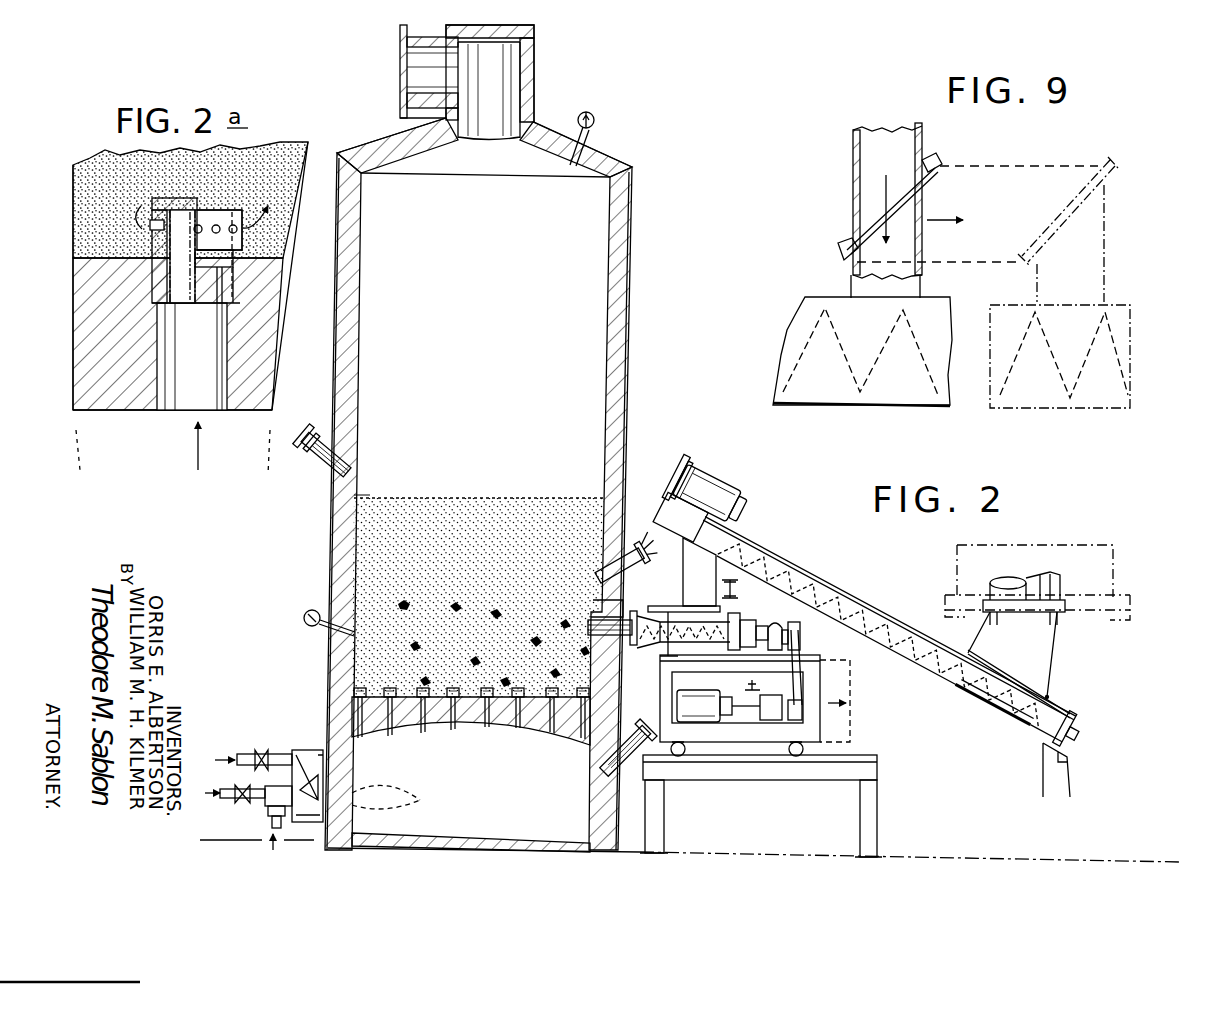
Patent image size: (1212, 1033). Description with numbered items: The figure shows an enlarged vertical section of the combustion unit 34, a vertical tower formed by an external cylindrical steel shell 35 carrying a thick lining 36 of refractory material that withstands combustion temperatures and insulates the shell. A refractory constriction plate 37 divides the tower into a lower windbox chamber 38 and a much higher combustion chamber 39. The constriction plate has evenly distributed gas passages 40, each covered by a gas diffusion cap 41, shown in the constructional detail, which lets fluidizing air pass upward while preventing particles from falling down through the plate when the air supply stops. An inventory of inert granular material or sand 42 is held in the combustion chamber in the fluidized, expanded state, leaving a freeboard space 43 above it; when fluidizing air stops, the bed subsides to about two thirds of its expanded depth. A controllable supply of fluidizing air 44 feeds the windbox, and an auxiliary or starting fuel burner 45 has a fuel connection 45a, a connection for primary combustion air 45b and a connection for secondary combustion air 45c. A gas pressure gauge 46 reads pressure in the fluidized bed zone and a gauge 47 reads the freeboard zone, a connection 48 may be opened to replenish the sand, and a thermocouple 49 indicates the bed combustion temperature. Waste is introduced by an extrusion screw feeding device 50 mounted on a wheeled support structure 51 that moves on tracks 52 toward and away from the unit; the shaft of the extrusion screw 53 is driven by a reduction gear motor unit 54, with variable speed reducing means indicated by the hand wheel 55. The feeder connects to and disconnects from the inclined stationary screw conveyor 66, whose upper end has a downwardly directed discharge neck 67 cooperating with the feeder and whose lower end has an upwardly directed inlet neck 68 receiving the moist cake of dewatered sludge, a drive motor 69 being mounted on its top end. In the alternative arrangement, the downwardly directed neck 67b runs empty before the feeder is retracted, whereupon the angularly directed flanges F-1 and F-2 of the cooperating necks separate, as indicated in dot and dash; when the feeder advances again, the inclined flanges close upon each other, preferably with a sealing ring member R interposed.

In FIG. 2, the combustion unit 34 is at (633, 428).
In FIG. 2, the external cylindrical steel shell 35 is at (628, 338).
In FIG. 2, the lining of refractory material 36 is at (605, 330).
In FIG. 2, the constriction plate 37 is at (440, 712).
In FIG. 2A, the constriction plate 37 is at (125, 393).
In FIG. 2, the windbox chamber 38 is at (482, 796).
In FIG. 2, the combustion chamber 39 is at (360, 494).
In FIG. 2, the gas passages 40 is at (425, 733).
In FIG. 2A, the gas passages 40 is at (210, 370).
In FIG. 2, the gas diffusion cap 41 is at (400, 690).
In FIG. 2A, the gas diffusion cap 41 is at (208, 205).
In FIG. 2, the inert granular material or sand 42 is at (490, 567).
In FIG. 2, the freeboard space 43 is at (480, 382).
In FIG. 2, the supply of fluidizing air 44 is at (648, 728).
In FIG. 2, the auxiliary or starting fuel burner 45 is at (300, 750).
In FIG. 2, the fuel connection 45a is at (240, 789).
In FIG. 2, the connection for primary combustion air 45b is at (268, 811).
In FIG. 2, the connection for secondary combustion air 45c is at (248, 754).
In FIG. 2, the gas pressure gauge 46 is at (306, 611).
In FIG. 2, the gas pressure gauge 47 is at (597, 118).
In FIG. 2, the connection 48 is at (310, 455).
In FIG. 2, the thermocouple 49 is at (646, 560).
In FIG. 2, the extrusion screw feeding device 50 is at (745, 620).
In FIG. 2, the wheeled support structure 51 is at (822, 690).
In FIG. 2, the tracks 52 is at (851, 762).
In FIG. 2, the extrusion screw 53 is at (776, 628).
In FIG. 2, the reduction gear motor unit 54 is at (727, 693).
In FIG. 2, the hand wheel 55 is at (753, 690).
In FIG. 2, the inclined stationary screw conveyor 66 is at (805, 577).
In FIG. 2, the discharge neck 67 is at (708, 584).
In FIG. 9, the downwardly directed neck 67b is at (853, 168).
In FIG. 2, the inlet neck 68 is at (1023, 656).
In FIG. 2, the drive motor 69 is at (712, 472).
In FIG. 9, the sealing ring member R is at (936, 161).
In FIG. 9, the angularly directed flange F-1 is at (840, 246).
In FIG. 9, the angularly directed flange F-2 is at (930, 176).